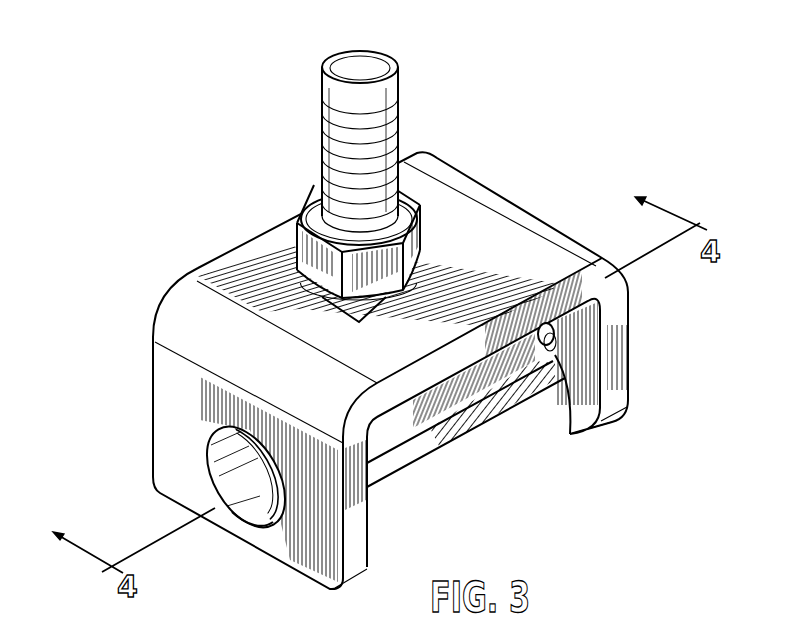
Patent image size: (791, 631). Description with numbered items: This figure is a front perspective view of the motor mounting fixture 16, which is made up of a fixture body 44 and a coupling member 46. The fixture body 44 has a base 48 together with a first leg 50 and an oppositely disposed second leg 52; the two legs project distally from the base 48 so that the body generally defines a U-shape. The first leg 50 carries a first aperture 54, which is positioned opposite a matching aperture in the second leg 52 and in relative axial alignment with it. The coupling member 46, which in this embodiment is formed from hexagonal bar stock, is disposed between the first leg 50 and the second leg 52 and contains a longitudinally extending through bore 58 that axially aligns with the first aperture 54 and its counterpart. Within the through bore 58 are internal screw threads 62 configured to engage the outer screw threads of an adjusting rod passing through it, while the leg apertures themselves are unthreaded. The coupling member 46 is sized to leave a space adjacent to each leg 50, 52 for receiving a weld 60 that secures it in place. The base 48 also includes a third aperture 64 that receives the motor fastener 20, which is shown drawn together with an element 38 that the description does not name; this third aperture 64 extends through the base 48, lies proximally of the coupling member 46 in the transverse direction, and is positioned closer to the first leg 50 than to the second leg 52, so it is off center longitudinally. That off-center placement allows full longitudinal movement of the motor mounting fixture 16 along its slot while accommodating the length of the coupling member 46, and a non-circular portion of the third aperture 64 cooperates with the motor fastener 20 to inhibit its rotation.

The motor mounting fixture 16 is at (199, 260).
The motor fastener 20 is at (344, 64).
The nut 38 is at (297, 250).
The fixture body 44 is at (640, 310).
The coupling member 46 is at (417, 458).
The base 48 is at (448, 202).
The first leg 50 is at (344, 583).
The second leg 52 is at (575, 435).
The first aperture 54 is at (261, 516).
The through bore 58 is at (252, 452).
The weld 60 is at (554, 358).
The internal screw threads 62 is at (262, 473).
The third aperture 64 is at (336, 317).